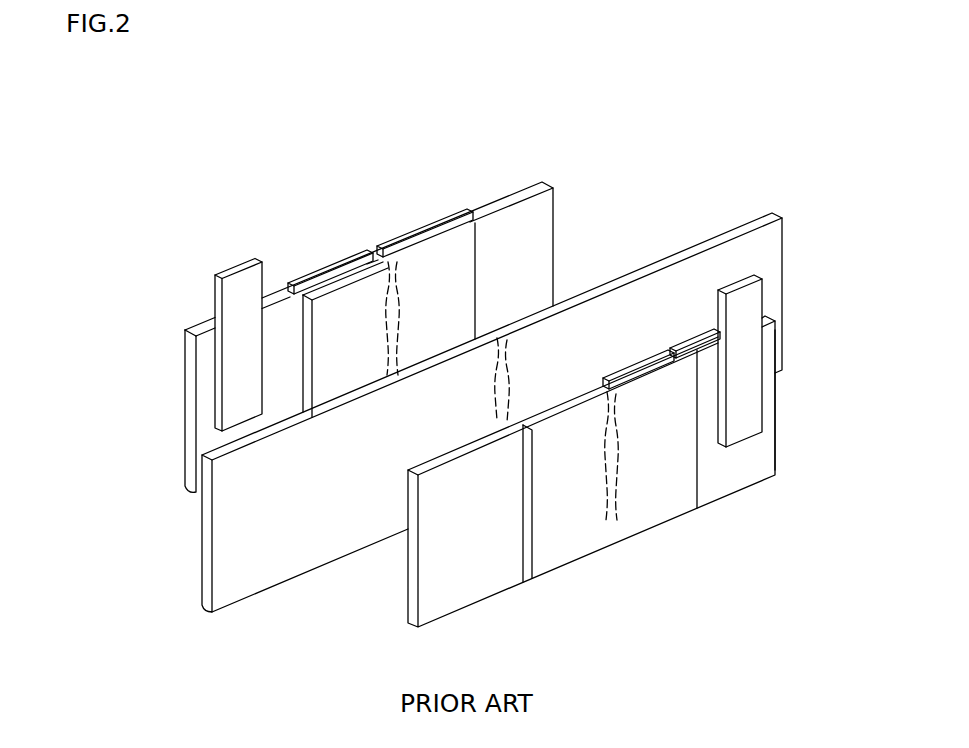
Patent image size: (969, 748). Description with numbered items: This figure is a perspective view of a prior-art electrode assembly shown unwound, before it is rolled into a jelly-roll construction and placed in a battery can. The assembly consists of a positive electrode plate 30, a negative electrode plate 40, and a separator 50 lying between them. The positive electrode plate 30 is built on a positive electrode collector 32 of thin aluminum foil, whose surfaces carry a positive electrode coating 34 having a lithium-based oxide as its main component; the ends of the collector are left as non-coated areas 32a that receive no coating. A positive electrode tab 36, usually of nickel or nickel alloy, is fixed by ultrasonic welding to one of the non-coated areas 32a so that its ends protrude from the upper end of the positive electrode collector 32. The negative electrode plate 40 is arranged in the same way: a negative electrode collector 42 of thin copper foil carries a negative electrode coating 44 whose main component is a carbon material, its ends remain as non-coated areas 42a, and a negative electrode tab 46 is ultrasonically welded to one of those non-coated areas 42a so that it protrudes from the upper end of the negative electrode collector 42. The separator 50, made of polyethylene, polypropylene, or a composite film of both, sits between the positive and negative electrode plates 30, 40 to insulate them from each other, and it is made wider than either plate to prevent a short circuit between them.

The positive electrode plate 30 is at (333, 228).
The positive electrode collector 32 is at (349, 310).
The non-coated areas 32a is at (187, 453).
The positive electrode coating 34 is at (450, 232).
The positive electrode tab 36 is at (242, 262).
The negative electrode plate 40 is at (690, 547).
The negative electrode collector 42 is at (641, 444).
The non-coated areas 42a is at (773, 417).
The negative electrode coating 44 is at (672, 360).
The negative electrode tab 46 is at (757, 275).
The separator 50 is at (772, 212).